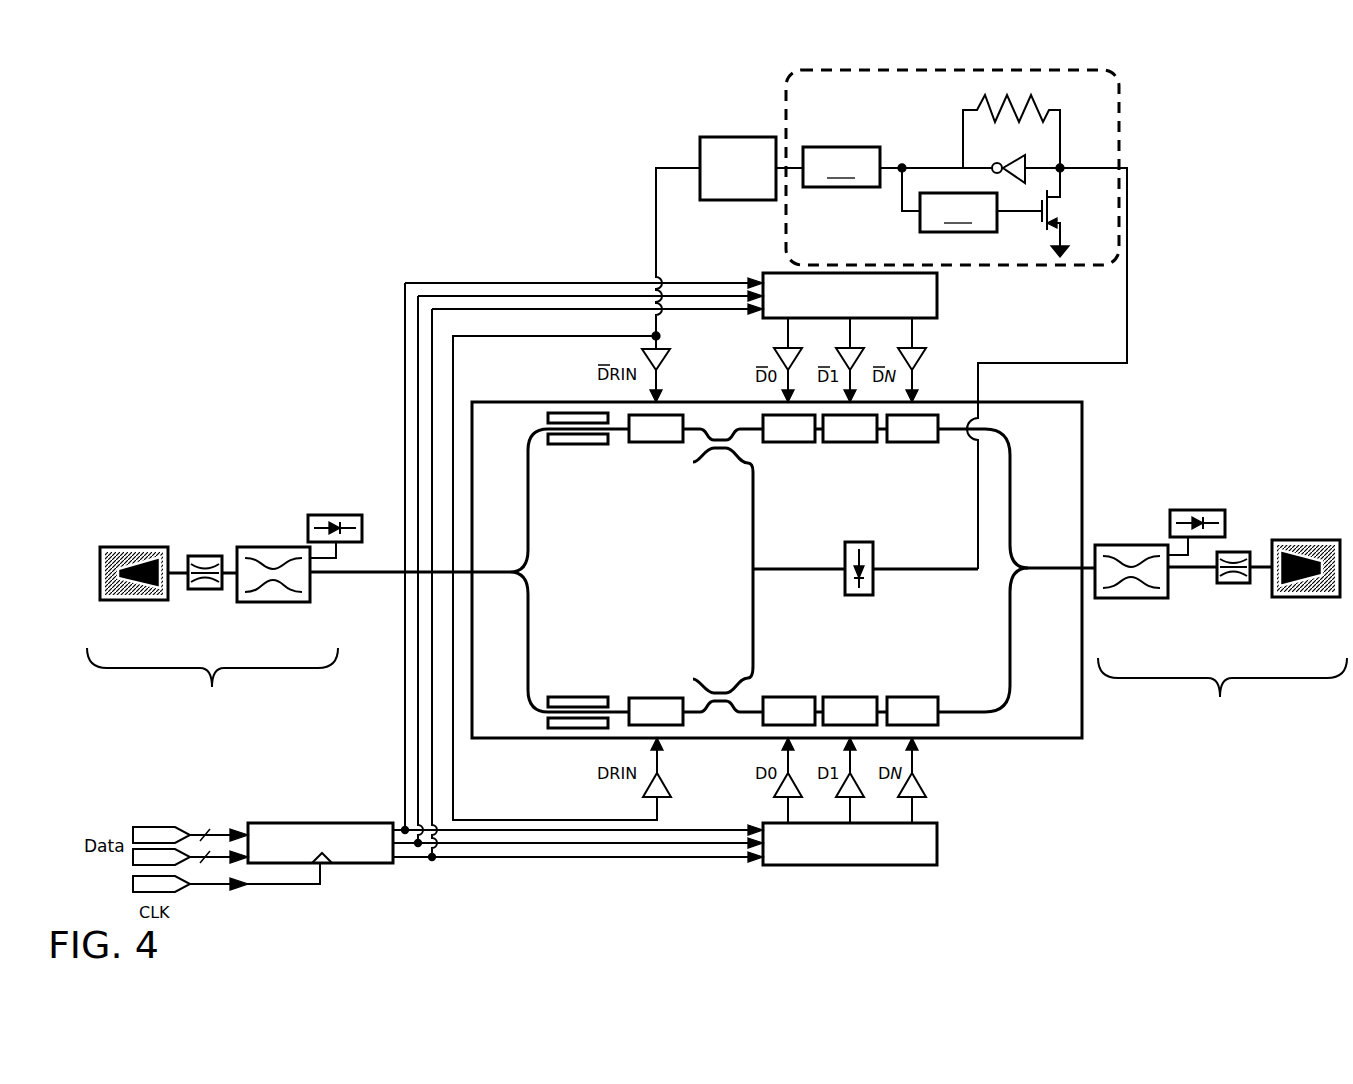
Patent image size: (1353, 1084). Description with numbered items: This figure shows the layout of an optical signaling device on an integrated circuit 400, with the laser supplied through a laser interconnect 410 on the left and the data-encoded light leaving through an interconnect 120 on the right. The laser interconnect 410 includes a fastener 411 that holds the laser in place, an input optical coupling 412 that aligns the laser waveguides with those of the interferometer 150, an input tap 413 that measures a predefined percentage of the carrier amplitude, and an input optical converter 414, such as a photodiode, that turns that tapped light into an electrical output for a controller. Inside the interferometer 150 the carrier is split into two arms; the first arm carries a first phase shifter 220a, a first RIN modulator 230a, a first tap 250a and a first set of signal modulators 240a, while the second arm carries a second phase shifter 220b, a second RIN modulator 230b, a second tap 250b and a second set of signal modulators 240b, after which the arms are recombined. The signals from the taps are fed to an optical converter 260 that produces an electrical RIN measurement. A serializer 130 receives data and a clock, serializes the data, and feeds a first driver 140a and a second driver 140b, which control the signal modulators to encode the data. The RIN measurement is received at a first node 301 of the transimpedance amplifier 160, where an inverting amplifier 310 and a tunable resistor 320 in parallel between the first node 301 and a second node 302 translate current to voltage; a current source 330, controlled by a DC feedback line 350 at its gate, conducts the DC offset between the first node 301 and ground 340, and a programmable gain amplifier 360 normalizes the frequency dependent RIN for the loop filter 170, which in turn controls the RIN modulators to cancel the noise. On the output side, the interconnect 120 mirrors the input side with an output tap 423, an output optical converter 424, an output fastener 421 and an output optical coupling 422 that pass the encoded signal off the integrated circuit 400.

The integrated circuit 400 is at (1222, 211).
The loop filter 170 is at (733, 137).
The transimpedance amplifier (TIA) 160 is at (1120, 88).
The programmable gain amplifier 360 is at (841, 167).
The DC feedback line 350 is at (958, 212).
The second node 302 is at (904, 166).
The first node 301 is at (1063, 166).
The inverting amplifier 310 is at (1004, 163).
The resistor 320 is at (972, 101).
The current source 330 is at (1065, 217).
The ground 340 is at (1052, 248).
The first driver 140a is at (937, 296).
The second driver 140b is at (850, 865).
The interferometer 150 is at (1045, 738).
The first phase shifter 220a is at (578, 445).
The second phase shifter 220b is at (578, 695).
The first RIN modulator 230a is at (660, 443).
The second RIN modulator 230b is at (663, 699).
The first tap 250a is at (721, 468).
The second tap 250b is at (733, 670).
The first set of signal modulators 240a is at (938, 447).
The second set of signal modulators 240b is at (938, 690).
The optical converter 260 is at (873, 550).
The serializer 130 is at (310, 823).
The laser interconnect 410 is at (224, 589).
The fastener 411 is at (148, 547).
The input optical coupling 412 is at (200, 589).
The input tap 413 is at (272, 602).
The input optical converter 414 is at (308, 524).
The interconnect 120 is at (1221, 601).
The output fastener 421 is at (1305, 597).
The output optical coupling 422 is at (1232, 583).
The output tap 423 is at (1130, 545).
The output optical converter 424 is at (1225, 522).